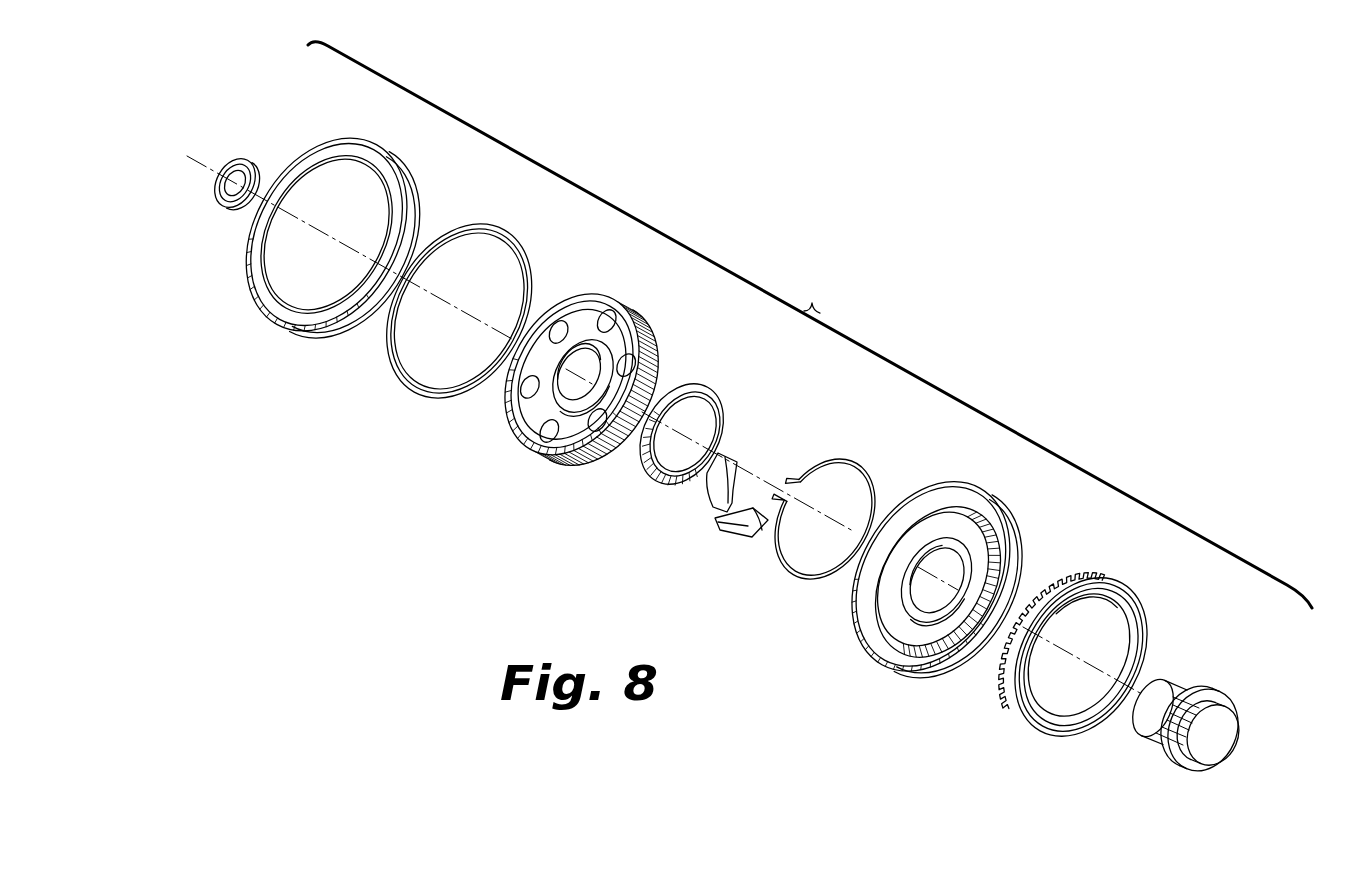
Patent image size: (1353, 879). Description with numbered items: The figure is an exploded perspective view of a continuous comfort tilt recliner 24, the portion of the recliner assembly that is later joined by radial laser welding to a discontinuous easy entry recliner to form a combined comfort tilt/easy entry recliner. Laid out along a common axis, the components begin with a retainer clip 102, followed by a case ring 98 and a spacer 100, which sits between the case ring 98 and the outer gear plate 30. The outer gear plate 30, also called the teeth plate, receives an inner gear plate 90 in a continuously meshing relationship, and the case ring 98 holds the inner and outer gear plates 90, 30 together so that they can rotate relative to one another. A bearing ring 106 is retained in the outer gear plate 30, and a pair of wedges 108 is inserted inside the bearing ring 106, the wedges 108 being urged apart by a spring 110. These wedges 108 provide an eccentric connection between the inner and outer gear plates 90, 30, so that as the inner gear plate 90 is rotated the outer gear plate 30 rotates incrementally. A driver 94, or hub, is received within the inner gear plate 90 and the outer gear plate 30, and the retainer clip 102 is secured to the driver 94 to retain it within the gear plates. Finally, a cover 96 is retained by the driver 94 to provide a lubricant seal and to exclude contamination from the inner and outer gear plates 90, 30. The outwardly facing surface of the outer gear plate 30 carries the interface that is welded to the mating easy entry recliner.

The continuous comfort tilt recliner 24 is at (810, 325).
The outer gear plate 30 is at (541, 462).
The inner gear plate 90 is at (885, 672).
The driver 94 is at (1160, 737).
The cover 96 is at (1033, 731).
The case ring 98 is at (280, 331).
The spacer 100 is at (413, 393).
The retainer clip 102 is at (222, 207).
The bearing ring 106 is at (655, 479).
The wedges 108 is at (711, 505).
The spring 110 is at (793, 574).